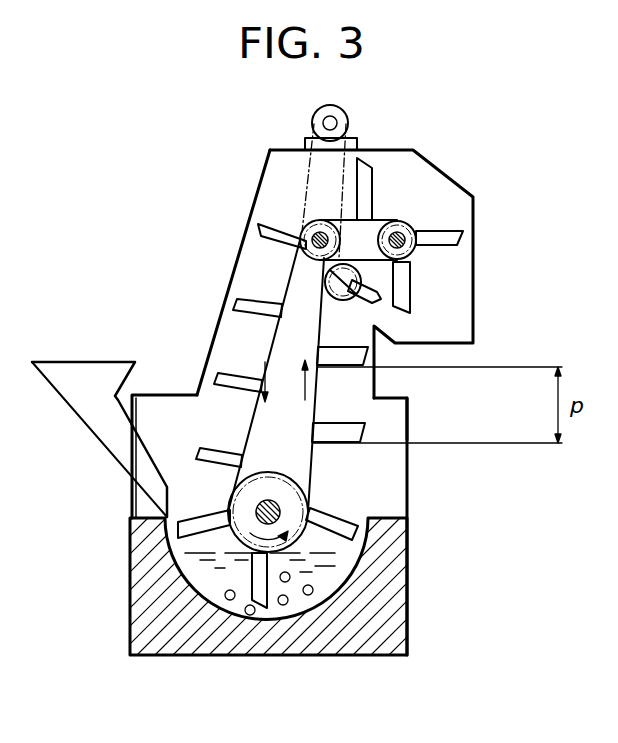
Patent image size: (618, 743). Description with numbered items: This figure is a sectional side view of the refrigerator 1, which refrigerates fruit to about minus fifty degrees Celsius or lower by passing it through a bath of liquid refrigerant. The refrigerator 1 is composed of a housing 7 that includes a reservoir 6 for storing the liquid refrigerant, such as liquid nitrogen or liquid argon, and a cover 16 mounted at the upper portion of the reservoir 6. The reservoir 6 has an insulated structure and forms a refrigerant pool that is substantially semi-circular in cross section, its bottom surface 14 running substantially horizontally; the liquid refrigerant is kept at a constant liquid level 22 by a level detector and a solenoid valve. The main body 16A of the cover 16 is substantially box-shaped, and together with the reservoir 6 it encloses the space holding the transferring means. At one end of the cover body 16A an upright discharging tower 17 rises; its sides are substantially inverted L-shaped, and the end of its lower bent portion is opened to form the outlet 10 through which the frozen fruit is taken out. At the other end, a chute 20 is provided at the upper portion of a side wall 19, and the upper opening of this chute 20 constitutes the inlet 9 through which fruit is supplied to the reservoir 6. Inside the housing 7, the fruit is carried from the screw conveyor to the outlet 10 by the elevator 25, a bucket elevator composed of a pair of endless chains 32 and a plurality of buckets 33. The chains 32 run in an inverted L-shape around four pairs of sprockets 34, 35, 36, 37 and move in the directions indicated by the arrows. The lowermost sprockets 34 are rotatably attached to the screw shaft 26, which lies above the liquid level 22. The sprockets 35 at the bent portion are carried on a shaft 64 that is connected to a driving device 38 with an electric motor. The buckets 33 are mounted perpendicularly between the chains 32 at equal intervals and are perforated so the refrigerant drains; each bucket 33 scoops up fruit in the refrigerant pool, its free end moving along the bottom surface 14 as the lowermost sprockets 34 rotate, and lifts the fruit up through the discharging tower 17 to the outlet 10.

The refrigerator 1 is at (155, 190).
The reservoir 6 is at (392, 603).
The housing 7 is at (425, 520).
The inlet 9 is at (77, 361).
The outlet 10 is at (440, 344).
The bottom surface 14 is at (250, 655).
The cover 16 is at (414, 478).
The main body of the cover 16A is at (410, 418).
The discharging tower 17 is at (238, 258).
The side wall 19 is at (132, 492).
The chute 20 is at (87, 421).
The liquid level 22 is at (186, 655).
The elevator 25 is at (246, 347).
The screw shaft 26 is at (256, 512).
The endless chains 32 is at (318, 392).
The buckets 33 is at (370, 183).
The lowermost sprockets 34 is at (296, 490).
The sprockets at the bent portion 35 is at (310, 226).
The sprockets 36 is at (403, 226).
The sprockets 37 is at (362, 283).
The driving device 38 is at (340, 108).
The shaft 64 is at (280, 238).